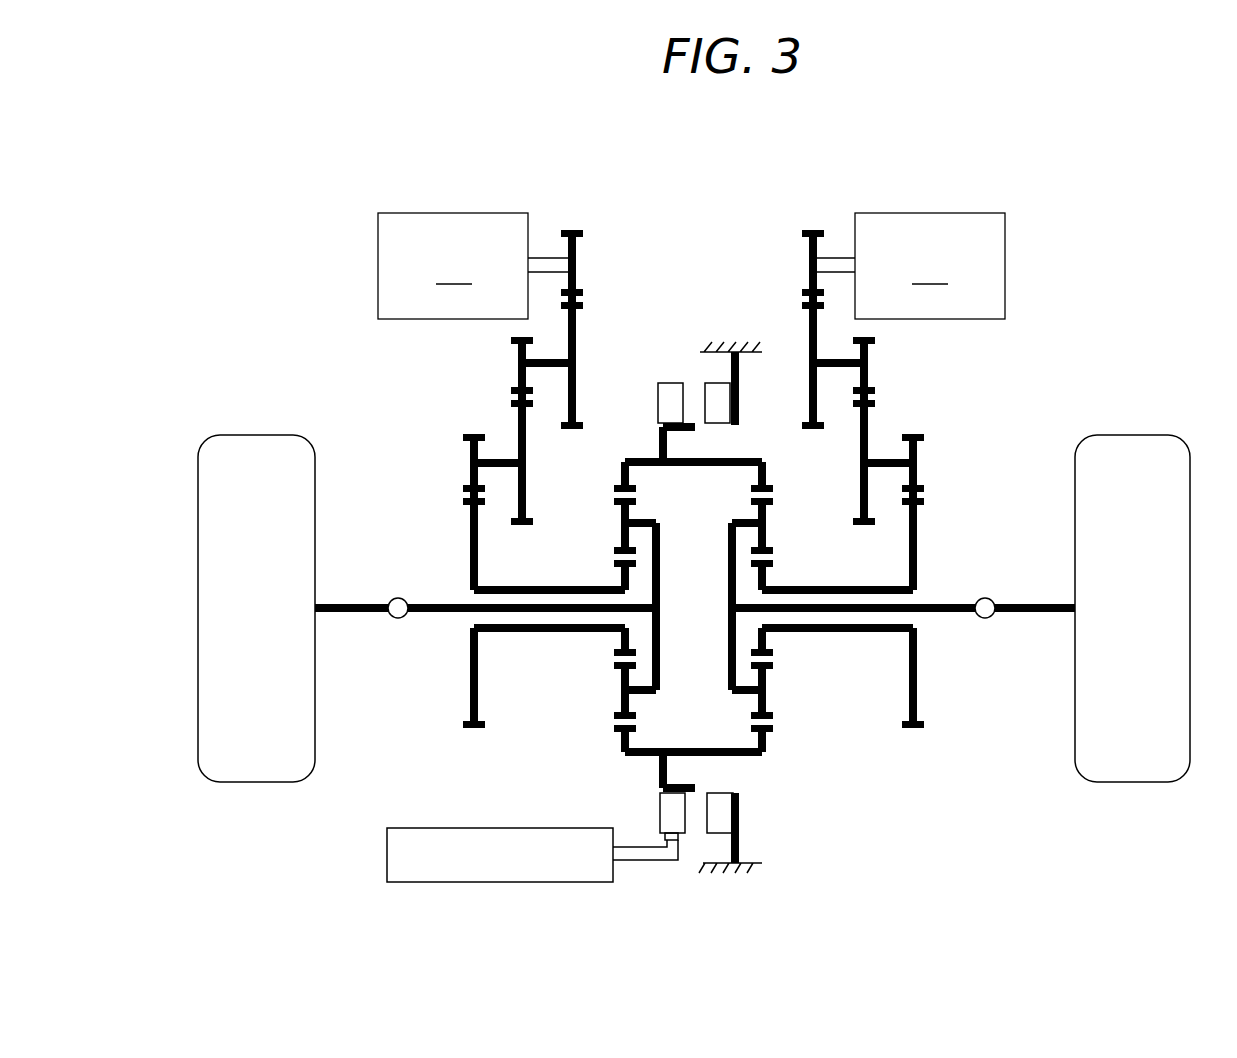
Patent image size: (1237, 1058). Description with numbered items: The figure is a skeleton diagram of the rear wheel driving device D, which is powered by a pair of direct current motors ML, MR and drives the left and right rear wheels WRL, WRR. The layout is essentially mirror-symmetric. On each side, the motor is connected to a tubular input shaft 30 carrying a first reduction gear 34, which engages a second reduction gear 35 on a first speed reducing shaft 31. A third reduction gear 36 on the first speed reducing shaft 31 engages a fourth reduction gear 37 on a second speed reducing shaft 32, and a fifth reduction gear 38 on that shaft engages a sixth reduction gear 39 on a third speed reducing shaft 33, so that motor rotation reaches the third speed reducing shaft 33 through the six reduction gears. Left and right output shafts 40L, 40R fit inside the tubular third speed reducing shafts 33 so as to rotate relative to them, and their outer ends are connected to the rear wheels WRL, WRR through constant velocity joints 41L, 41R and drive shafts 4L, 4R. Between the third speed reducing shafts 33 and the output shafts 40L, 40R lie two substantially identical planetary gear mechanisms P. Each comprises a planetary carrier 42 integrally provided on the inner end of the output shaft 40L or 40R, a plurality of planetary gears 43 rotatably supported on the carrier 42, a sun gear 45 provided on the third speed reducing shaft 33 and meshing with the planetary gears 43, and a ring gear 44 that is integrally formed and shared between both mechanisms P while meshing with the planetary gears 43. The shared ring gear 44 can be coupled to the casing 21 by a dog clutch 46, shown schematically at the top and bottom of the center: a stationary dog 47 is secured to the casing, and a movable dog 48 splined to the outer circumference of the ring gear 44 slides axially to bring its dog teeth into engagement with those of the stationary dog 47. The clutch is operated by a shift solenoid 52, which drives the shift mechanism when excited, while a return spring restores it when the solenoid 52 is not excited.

The input shaft 30 is at (540, 262).
The first reduction gear 34 is at (585, 233).
The second reduction gear 35 is at (585, 301).
The third reduction gear 36 is at (512, 341).
The fourth reduction gear 37 is at (512, 400).
The fifth reduction gear 38 is at (463, 437).
The sixth reduction gear 39 is at (463, 498).
The first speed reducing shaft 31 is at (548, 368).
The second speed reducing shaft 32 is at (498, 468).
The third speed reducing shaft 33 is at (565, 588).
The ring gear 44 is at (620, 488).
The planetary gear 43 is at (752, 500).
The planetary carrier 42 is at (658, 550).
The sun gear 45 is at (613, 656).
The rear wheel driving device D is at (671, 326).
The movable dog 48 is at (665, 810).
The stationary dog 47 is at (732, 800).
The casing 21 is at (758, 862).
The dog clutch 46 is at (690, 842).
The shift solenoid 52 is at (476, 870).
The planetary gear mechanism P is at (607, 737).
The left drive shaft 4L is at (352, 612).
The right drive shaft 4R is at (1035, 612).
The left constant velocity joint 41L is at (398, 598).
The right constant velocity joint 41R is at (987, 598).
The left output shaft 40L is at (431, 612).
The right output shaft 40R is at (955, 612).
The left motor ML is at (453, 266).
The right motor MR is at (930, 266).
The left rear wheel WRL is at (237, 782).
The right rear wheel WRR is at (1150, 782).